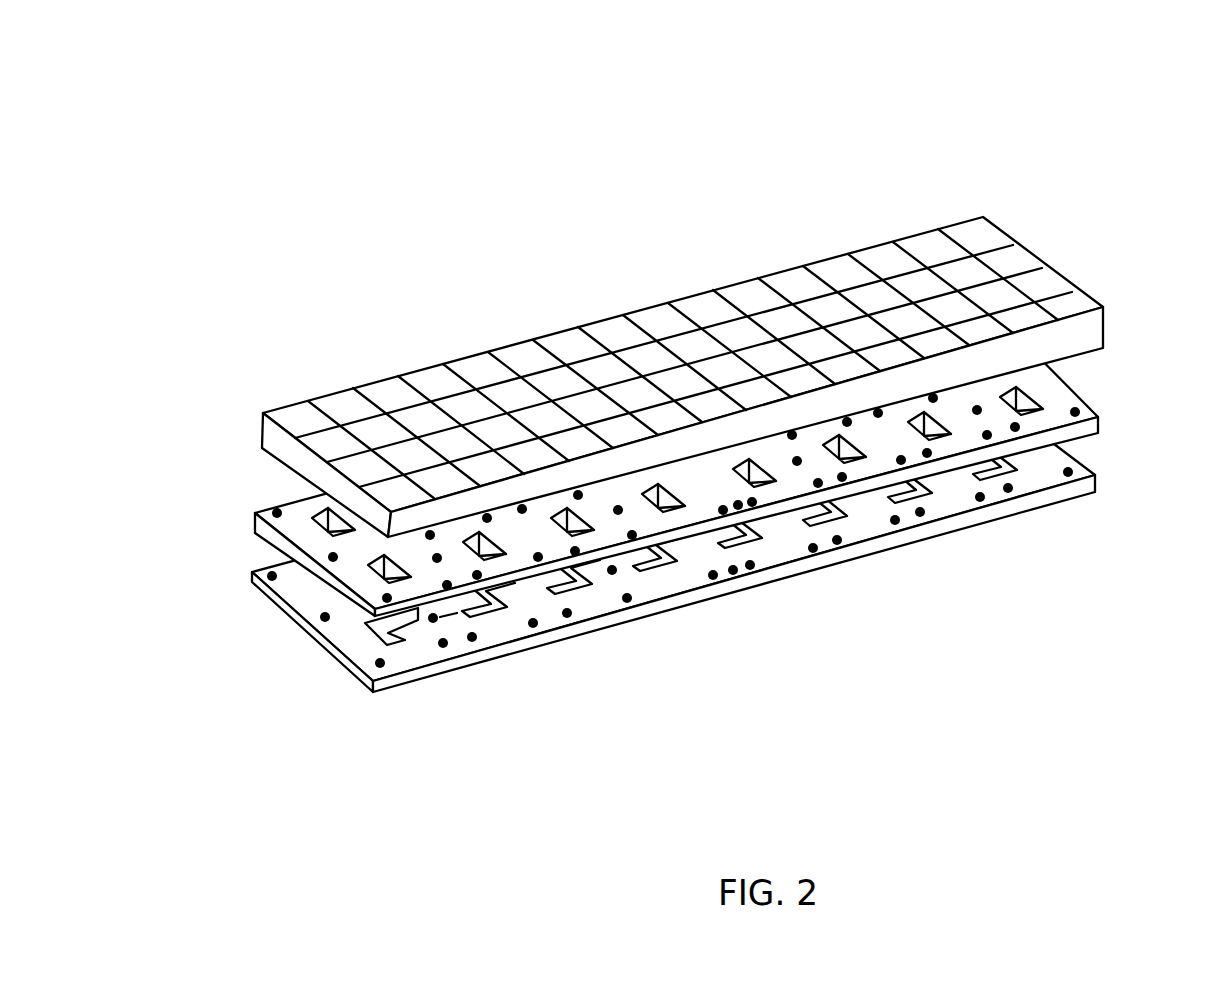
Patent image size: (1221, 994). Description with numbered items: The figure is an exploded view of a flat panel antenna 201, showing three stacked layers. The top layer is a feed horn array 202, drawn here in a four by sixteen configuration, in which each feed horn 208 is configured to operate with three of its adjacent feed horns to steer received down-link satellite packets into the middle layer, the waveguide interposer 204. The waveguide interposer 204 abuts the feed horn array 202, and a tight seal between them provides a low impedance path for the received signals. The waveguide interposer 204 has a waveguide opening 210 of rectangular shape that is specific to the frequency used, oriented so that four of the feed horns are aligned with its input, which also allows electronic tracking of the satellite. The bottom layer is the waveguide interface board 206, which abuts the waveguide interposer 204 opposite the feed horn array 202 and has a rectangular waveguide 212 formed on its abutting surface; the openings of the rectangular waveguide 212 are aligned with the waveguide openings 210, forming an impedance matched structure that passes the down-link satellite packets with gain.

The flat panel antenna 201 is at (243, 88).
The feed horn array 202 is at (268, 437).
The waveguide interposer 204 is at (291, 533).
The waveguide interface board 206 is at (305, 602).
The feed horn 208 is at (973, 242).
The waveguide opening 210 is at (1027, 393).
The rectangular waveguide 212 is at (403, 633).